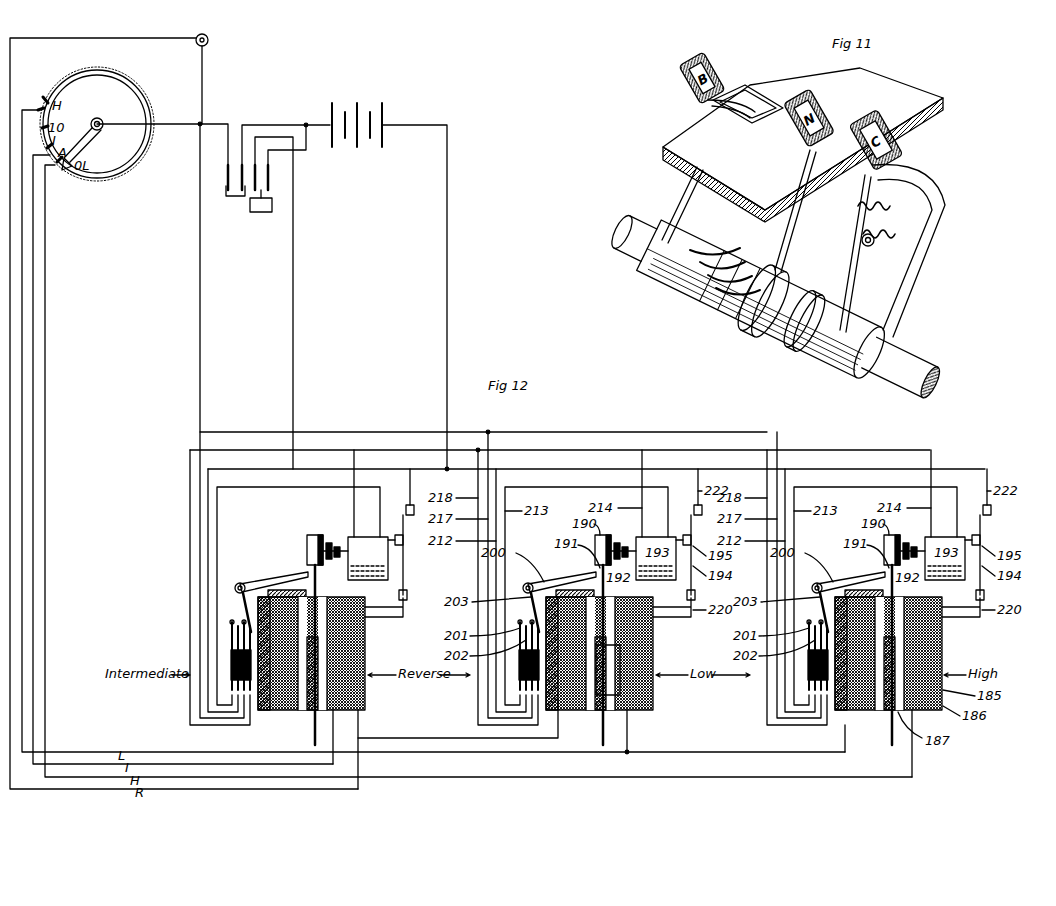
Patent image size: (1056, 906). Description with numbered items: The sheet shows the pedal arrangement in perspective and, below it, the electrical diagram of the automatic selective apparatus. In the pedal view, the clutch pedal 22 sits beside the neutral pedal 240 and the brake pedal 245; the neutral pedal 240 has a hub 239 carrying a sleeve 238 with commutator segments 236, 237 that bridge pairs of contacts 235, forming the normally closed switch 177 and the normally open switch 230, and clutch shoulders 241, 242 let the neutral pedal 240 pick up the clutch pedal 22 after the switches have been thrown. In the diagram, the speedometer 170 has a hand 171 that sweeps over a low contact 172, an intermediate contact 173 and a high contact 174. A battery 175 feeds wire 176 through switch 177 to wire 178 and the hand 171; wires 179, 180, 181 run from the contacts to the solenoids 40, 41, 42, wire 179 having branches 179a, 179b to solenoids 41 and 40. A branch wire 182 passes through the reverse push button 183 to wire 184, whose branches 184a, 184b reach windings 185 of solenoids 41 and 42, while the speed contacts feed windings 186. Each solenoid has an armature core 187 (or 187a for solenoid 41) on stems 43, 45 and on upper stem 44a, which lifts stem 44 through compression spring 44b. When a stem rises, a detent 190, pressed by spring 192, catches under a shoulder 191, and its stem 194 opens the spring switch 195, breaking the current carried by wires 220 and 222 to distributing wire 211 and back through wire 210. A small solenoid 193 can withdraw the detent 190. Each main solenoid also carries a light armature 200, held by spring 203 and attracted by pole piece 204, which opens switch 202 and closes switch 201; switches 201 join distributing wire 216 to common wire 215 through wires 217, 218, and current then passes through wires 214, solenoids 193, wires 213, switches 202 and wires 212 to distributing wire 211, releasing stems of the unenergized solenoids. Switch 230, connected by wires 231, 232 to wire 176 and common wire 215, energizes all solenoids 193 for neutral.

In FIG. 11, the clutch pedal 22 is at (918, 238).
In FIG. 12, the solenoid 40 is at (948, 650).
In FIG. 12, the solenoid 41 is at (658, 638).
In FIG. 12, the solenoid 42 is at (370, 692).
In FIG. 12, the stem 43 is at (888, 725).
In FIG. 12, the stem 44 is at (602, 724).
In FIG. 12, the upper stem 44a is at (658, 686).
In FIG. 12, the compression spring 44b is at (598, 708).
In FIG. 12, the stem 45 is at (313, 730).
In FIG. 12, the speedometer 170 is at (148, 150).
In FIG. 12, the speedometer hand 171 is at (92, 142).
In FIG. 12, the low contact 172 is at (64, 168).
In FIG. 12, the intermediate contact 173 is at (52, 180).
In FIG. 12, the high contact 174 is at (76, 76).
In FIG. 12, the battery 175 is at (354, 104).
In FIG. 12, the wire 176 is at (272, 125).
In FIG. 11, the switch 177 is at (682, 265).
In FIG. 12, the switch 177 is at (226, 190).
In FIG. 12, the wire 178 is at (172, 124).
In FIG. 12, the wire 179 is at (22, 322).
In FIG. 12, the branch wire 179a is at (630, 736).
In FIG. 12, the branch wire 179b is at (845, 740).
In FIG. 12, the wire 180 is at (33, 295).
In FIG. 12, the wire 181 is at (45, 269).
In FIG. 12, the branch wire 182 is at (205, 80).
In FIG. 12, the push button switch 183 is at (210, 42).
In FIG. 12, the wire 184 is at (112, 38).
In FIG. 12, the branch wire 184a is at (358, 720).
In FIG. 12, the branch wire 184b is at (424, 738).
In FIG. 12, the winding 185 is at (366, 626).
In FIG. 12, the winding 186 is at (366, 646).
In FIG. 12, the armature core 187 is at (300, 712).
In FIG. 12, the armature core 187a is at (656, 708).
In FIG. 12, the detent 190 is at (312, 535).
In FIG. 12, the shoulder 191 is at (312, 568).
In FIG. 12, the spring 192 is at (333, 564).
In FIG. 12, the solenoid 193 is at (368, 558).
In FIG. 12, the stem 194 is at (405, 566).
In FIG. 12, the spring switch 195 is at (405, 546).
In FIG. 12, the armature 200 is at (256, 582).
In FIG. 12, the switch 201 is at (232, 628).
In FIG. 12, the switch 202 is at (238, 640).
In FIG. 12, the spring 203 is at (243, 597).
In FIG. 12, the pole piece 204 is at (287, 592).
In FIG. 12, the wire 210 is at (447, 272).
In FIG. 12, the distributing wire 211 is at (566, 469).
In FIG. 12, the wires 212 is at (208, 541).
In FIG. 12, the wires 213 is at (217, 511).
In FIG. 12, the wires 214 is at (354, 508).
In FIG. 12, the common wire 215 is at (370, 450).
In FIG. 12, the distributing wire 216 is at (200, 322).
In FIG. 12, the wires 217 is at (200, 519).
In FIG. 12, the wires 218 is at (190, 498).
In FIG. 12, the wires 220 is at (405, 610).
In FIG. 12, the wires 222 is at (410, 491).
In FIG. 11, the switch 230 is at (720, 292).
In FIG. 12, the switch 230 is at (261, 212).
In FIG. 12, the wire 231 is at (306, 150).
In FIG. 12, the wire 232 is at (293, 294).
In FIG. 11, the contacts 235 is at (748, 190).
In FIG. 11, the commutator segment 236 is at (702, 282).
In FIG. 11, the commutator segment 237 is at (733, 302).
In FIG. 11, the sleeve 238 is at (745, 322).
In FIG. 11, the hub 239 is at (768, 300).
In FIG. 11, the neutral pedal 240 is at (838, 122).
In FIG. 11, the clutch shoulder 241 is at (800, 340).
In FIG. 11, the clutch shoulder 242 is at (864, 254).
In FIG. 11, the brake pedal 245 is at (725, 82).